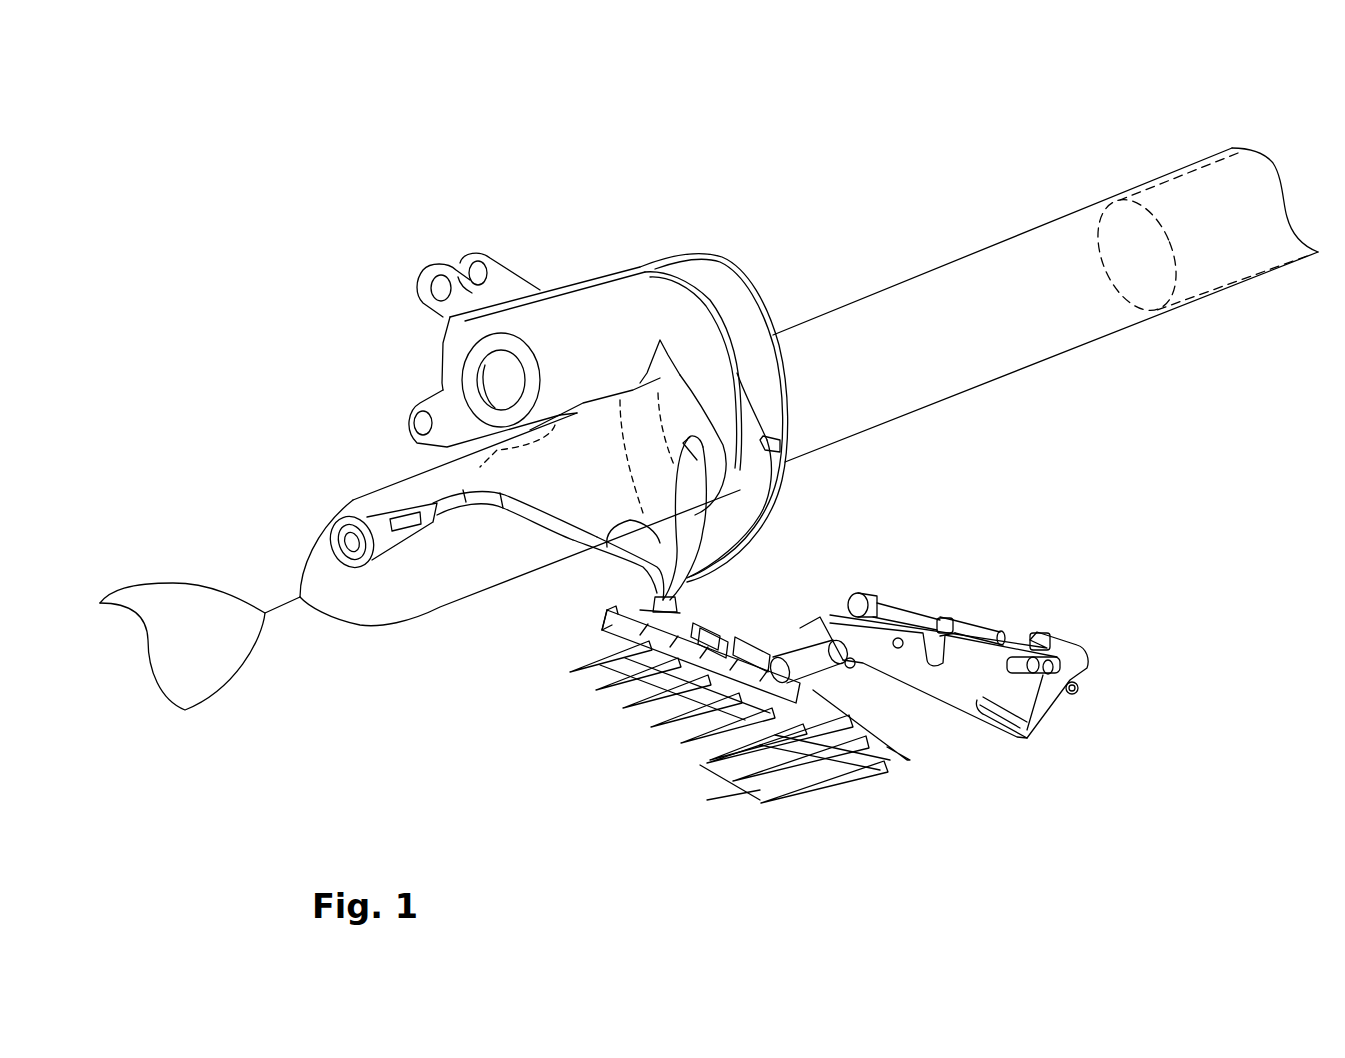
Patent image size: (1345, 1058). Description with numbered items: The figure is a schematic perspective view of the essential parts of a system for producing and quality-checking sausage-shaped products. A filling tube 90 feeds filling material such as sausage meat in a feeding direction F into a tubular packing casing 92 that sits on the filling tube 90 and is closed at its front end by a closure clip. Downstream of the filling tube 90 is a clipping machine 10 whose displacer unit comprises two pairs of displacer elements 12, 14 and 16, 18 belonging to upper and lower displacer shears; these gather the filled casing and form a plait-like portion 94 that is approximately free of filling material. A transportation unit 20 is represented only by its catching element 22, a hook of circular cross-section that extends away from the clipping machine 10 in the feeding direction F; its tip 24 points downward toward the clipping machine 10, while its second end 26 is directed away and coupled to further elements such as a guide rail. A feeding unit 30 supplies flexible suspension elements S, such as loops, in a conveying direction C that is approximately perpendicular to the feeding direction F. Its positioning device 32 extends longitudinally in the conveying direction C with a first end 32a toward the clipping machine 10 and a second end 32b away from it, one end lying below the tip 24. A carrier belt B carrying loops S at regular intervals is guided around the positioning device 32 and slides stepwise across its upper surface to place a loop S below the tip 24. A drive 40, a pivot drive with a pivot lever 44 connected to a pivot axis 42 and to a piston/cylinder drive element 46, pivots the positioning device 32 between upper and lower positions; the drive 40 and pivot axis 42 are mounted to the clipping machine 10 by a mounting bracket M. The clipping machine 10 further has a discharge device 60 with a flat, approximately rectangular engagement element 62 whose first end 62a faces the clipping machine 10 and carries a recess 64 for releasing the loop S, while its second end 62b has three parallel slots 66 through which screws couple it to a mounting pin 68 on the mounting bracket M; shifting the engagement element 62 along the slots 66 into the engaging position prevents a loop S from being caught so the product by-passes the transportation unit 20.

The clipping machine 10 is at (830, 335).
The displacer element 12 is at (642, 280).
The displacer element 14 is at (530, 467).
The displacer element 16 is at (717, 270).
The displacer element 18 is at (757, 513).
The transportation unit 20 is at (288, 450).
The catching element 22 is at (497, 513).
The tip 24 is at (657, 603).
The second end 26 is at (377, 553).
The feeding unit 30 is at (553, 775).
The positioning device 32 is at (601, 630).
The first end 32a is at (600, 616).
The second end 32b is at (713, 740).
The drive 40 is at (1060, 594).
The pivot axis 42 is at (770, 650).
The pivot lever 44 is at (838, 600).
The drive element 46 is at (953, 625).
The discharge device 60 is at (588, 603).
The engagement element 62 is at (645, 623).
The first end 62a is at (610, 604).
The second end 62b is at (780, 692).
The recess 64 is at (673, 610).
The slots 66 is at (733, 640).
The mounting pin 68 is at (822, 660).
The filling tube 90 is at (1192, 193).
The tubular packing casing 92 is at (997, 240).
The plait-like portion 94 is at (282, 609).
The suspension element S is at (848, 546).
The feeding direction F is at (812, 411).
The conveying direction C is at (546, 684).
The carrier belt B is at (887, 772).
The mounting bracket M is at (1027, 695).